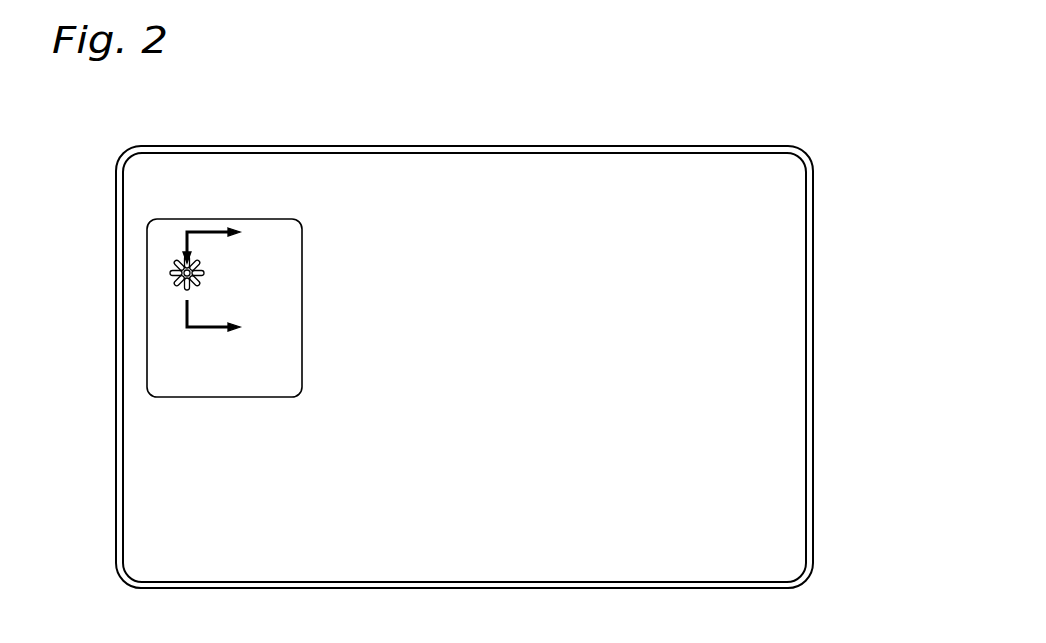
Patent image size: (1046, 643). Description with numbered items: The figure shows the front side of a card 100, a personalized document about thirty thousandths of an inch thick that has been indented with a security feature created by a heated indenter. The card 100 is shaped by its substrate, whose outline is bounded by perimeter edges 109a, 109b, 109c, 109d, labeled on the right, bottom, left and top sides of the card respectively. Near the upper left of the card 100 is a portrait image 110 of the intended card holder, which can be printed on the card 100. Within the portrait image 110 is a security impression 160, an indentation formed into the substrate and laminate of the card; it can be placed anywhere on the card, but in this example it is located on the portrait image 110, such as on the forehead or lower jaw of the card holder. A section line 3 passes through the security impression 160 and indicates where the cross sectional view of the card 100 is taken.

The card 100 is at (688, 86).
The perimeter edge 109a is at (813, 275).
The perimeter edge 109b is at (508, 588).
The perimeter edge 109c is at (117, 417).
The perimeter edge 109d is at (513, 146).
The portrait image 110 is at (147, 285).
The security impression 160 is at (180, 258).
The section line 3- 3 is at (222, 281).